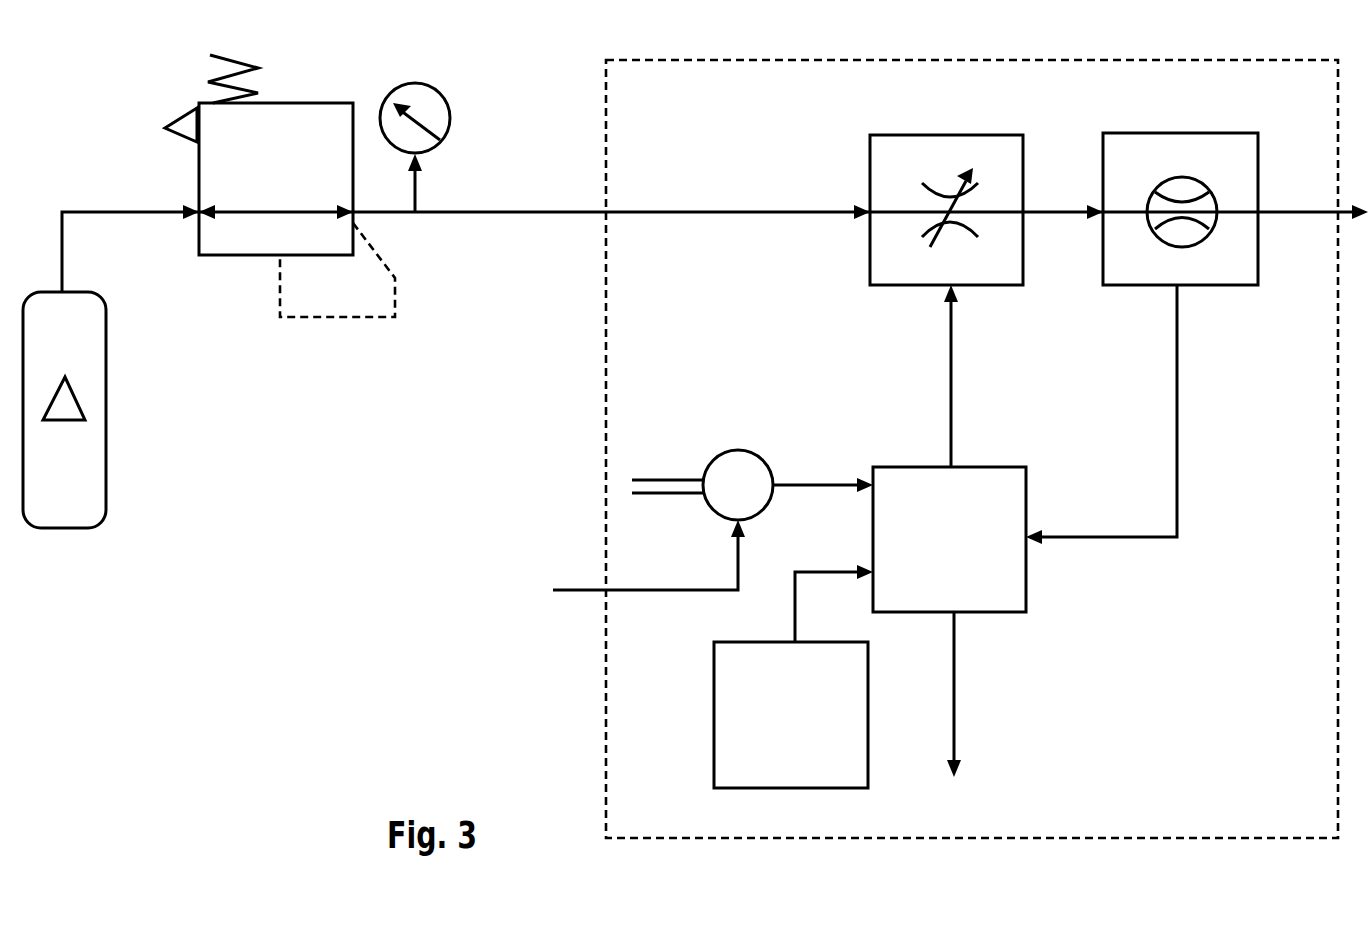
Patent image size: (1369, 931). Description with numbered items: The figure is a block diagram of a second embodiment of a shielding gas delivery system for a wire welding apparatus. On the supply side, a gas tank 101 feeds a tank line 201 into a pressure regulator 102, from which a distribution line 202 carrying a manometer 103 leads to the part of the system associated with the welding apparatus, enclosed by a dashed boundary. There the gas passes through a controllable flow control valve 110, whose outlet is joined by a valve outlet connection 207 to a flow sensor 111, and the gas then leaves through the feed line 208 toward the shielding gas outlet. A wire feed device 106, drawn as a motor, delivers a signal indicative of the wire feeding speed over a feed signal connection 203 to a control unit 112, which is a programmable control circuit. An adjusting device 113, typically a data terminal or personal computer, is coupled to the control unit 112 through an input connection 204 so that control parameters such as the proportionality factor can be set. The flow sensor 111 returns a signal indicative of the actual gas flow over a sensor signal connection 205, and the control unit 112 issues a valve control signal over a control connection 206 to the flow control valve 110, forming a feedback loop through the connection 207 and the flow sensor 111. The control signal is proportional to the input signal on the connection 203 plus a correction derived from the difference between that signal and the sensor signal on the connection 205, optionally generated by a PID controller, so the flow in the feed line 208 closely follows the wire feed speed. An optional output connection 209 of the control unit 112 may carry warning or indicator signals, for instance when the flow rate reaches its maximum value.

The gas tank 101 is at (64, 410).
The pressure regulator 102 is at (280, 186).
The manometer 103 is at (415, 126).
The wire feed device 106 is at (663, 501).
The controllable flow control valve 110 is at (946, 210).
The flow sensor 111 is at (1180, 209).
The control unit 112 is at (949, 539).
The adjusting device 113 is at (791, 715).
The tank line 201 is at (130, 234).
The distribution line 202 is at (611, 194).
The feed signal connection 203 is at (823, 469).
The input connection 204 is at (834, 588).
The sensor signal connection 205 is at (1101, 414).
The control connection 206 is at (978, 375).
The valve outlet connection 207 is at (1063, 195).
The feed line 208 is at (1313, 195).
The output connection 209 is at (981, 694).